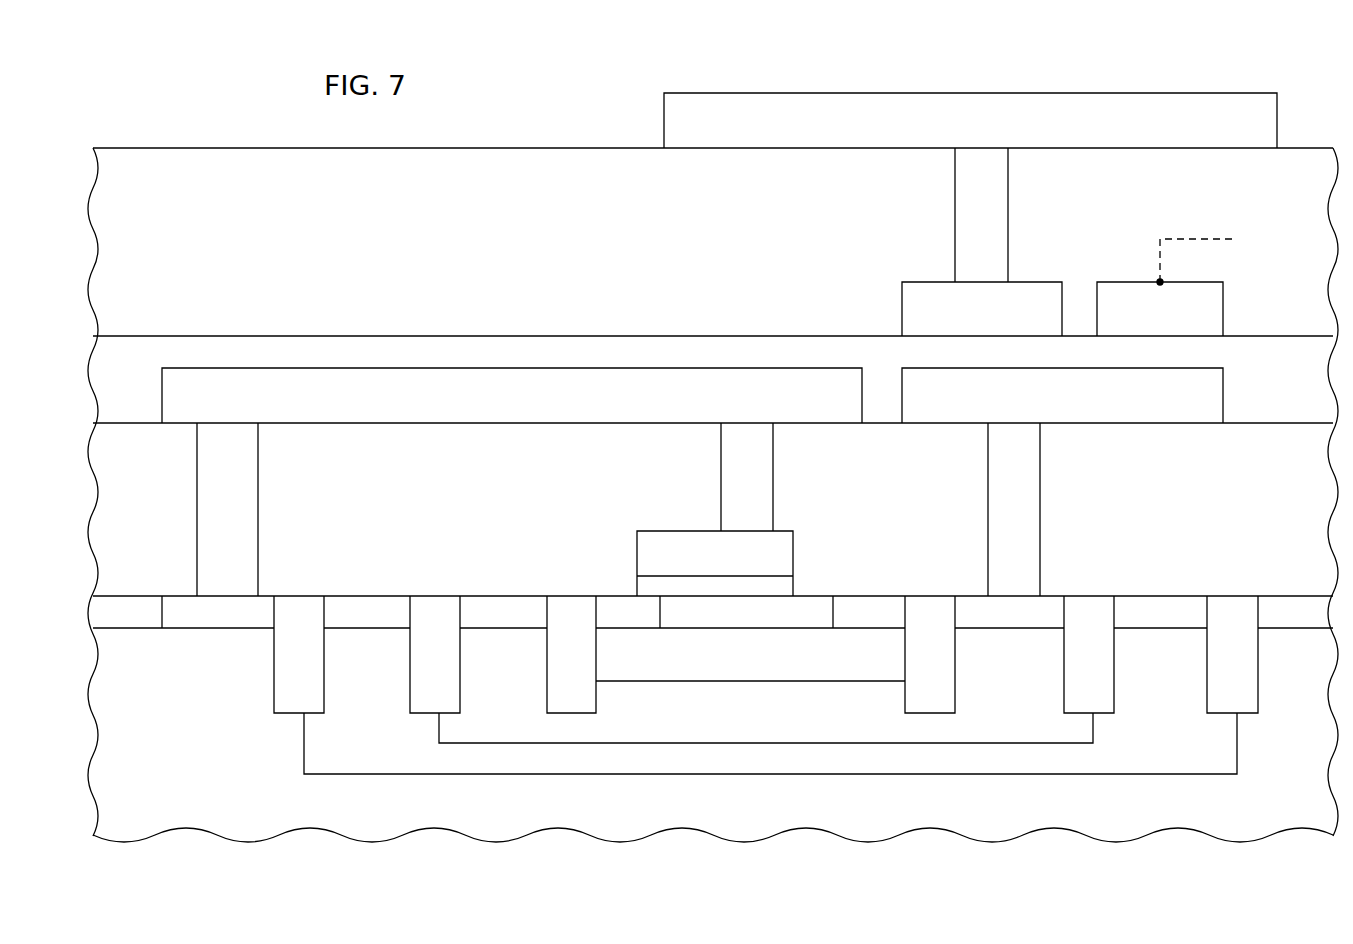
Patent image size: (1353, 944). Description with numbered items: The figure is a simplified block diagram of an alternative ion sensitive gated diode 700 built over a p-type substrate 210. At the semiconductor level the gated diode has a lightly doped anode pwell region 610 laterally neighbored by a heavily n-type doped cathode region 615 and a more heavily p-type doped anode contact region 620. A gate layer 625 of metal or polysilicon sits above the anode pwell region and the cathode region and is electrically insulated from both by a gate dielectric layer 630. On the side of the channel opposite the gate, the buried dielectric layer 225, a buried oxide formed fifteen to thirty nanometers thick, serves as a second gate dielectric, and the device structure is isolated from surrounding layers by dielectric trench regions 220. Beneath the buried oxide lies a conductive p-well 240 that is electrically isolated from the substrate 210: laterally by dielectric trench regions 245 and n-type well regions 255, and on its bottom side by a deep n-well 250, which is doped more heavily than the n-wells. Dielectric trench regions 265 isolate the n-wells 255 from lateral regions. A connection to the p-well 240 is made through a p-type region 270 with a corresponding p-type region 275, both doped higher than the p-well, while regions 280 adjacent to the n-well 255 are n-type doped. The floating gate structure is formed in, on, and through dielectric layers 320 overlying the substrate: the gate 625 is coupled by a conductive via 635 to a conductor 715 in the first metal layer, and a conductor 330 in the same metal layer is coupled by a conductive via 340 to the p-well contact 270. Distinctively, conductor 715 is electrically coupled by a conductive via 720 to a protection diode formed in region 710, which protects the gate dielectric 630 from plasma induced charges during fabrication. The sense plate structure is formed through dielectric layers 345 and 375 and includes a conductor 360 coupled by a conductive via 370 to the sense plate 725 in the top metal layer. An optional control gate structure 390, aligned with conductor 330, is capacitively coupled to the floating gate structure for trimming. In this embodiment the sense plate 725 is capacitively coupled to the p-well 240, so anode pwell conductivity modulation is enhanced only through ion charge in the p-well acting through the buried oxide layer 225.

The ion sensitive gated diode 700 is at (942, 51).
The sense plate 725 is at (928, 131).
The conductive via 370 is at (1008, 198).
The dielectric layer 375 is at (113, 253).
The conductor 360 is at (965, 320).
The control gate structure 390 is at (1144, 320).
The dielectric layer 345 is at (113, 388).
The conductor 715 is at (504, 406).
The conductor 330 is at (1047, 406).
The dielectric layer 320 is at (113, 504).
The conductive via 720 is at (250, 490).
The conductive via 635 is at (773, 472).
The conductive via 340 is at (1040, 472).
The gate layer 625 is at (699, 567).
The gate dielectric layer 630 is at (790, 588).
The p-type region 275 is at (495, 606).
The protection diode region 710 is at (172, 605).
The n-type doped region 280 is at (363, 606).
The cathode region 615 is at (610, 606).
The anode contact region 620 is at (868, 620).
The anode pwell region 610 is at (698, 620).
The dielectric trench region 265 is at (282, 675).
The dielectric trench region 245 is at (421, 675).
The dielectric trench region 220 is at (556, 675).
The buried dielectric layer 225 is at (769, 669).
The n-type well region 255 is at (349, 694).
The p-type region 270 is at (1015, 620).
The p-well 240 is at (732, 726).
The deep n-well 250 is at (1001, 766).
The substrate 210 is at (1267, 800).